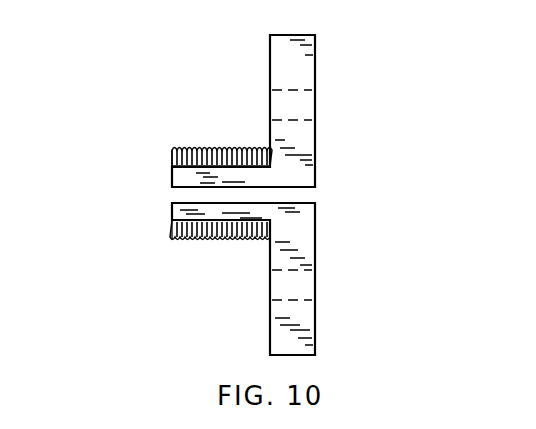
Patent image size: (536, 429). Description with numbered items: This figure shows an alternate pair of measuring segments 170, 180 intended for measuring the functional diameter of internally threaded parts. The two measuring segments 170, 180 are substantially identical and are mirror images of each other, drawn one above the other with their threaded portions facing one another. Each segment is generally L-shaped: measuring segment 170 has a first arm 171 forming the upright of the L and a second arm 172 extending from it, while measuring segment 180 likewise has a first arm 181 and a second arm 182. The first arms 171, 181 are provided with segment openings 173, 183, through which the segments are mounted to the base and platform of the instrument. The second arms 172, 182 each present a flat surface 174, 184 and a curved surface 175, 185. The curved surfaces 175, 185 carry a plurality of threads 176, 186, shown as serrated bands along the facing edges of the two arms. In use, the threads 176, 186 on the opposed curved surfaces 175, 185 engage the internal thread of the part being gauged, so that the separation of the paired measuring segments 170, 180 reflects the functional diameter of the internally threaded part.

The measuring segment 170 is at (270, 49).
The first arm 171 is at (270, 128).
The second arm 172 is at (202, 188).
The segment opening 173 is at (270, 91).
The flat surface 174 is at (171, 174).
The curved surface 175 is at (171, 156).
The threads 176 is at (222, 149).
The measuring segment 180 is at (270, 333).
The first arm 181 is at (270, 262).
The second arm 182 is at (285, 203).
The segment opening 183 is at (270, 285).
The flat surface 184 is at (171, 212).
The curved surface 185 is at (171, 232).
The threads 186 is at (207, 243).